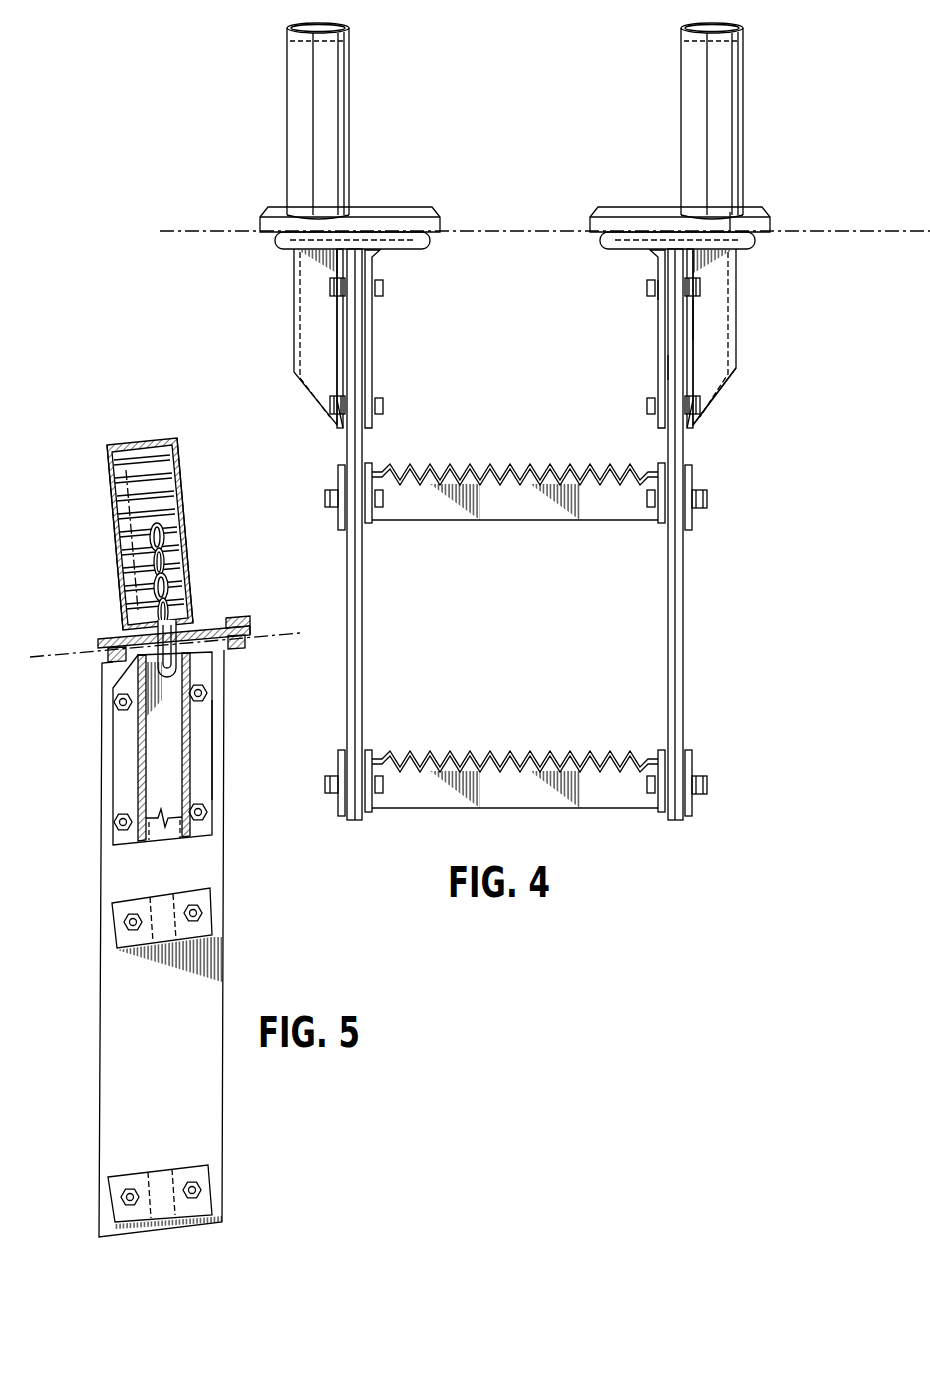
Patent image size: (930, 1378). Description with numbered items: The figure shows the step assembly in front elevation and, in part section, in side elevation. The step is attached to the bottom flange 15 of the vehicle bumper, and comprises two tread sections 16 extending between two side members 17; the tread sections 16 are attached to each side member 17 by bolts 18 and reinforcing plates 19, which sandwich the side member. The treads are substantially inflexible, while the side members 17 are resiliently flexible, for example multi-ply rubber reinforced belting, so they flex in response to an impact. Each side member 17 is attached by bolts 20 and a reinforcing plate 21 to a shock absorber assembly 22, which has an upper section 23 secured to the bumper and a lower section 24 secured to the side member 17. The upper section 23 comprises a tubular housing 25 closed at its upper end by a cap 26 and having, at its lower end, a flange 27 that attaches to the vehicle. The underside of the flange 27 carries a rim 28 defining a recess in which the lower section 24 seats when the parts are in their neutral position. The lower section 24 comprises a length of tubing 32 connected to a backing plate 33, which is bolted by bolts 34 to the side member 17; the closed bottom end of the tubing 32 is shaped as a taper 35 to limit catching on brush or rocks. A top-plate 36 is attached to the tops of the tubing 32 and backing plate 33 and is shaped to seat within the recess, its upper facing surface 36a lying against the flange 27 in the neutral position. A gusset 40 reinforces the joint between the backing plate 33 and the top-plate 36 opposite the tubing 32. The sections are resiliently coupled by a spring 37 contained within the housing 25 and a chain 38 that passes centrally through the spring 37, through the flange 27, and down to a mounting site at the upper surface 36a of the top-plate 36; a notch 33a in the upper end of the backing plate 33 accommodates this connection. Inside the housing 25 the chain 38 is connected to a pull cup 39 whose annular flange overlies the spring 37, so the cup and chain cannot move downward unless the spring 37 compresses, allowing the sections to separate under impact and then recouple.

In FIG. 4, the bottom flange 15 is at (510, 227).
In FIG. 4, the tread sections 16 is at (525, 511).
In FIG. 4, the side members 17 is at (358, 661).
In FIG. 5, the side members 17 is at (180, 1135).
In FIG. 4, the bolts 18 is at (696, 778).
In FIG. 5, the bolts 18 is at (190, 1176).
In FIG. 4, the reinforcing plates 19 is at (690, 761).
In FIG. 5, the reinforcing plates 19 is at (165, 1208).
In FIG. 4, the bolts 20 is at (660, 291).
In FIG. 4, the reinforcing plate 21 is at (660, 369).
In FIG. 4, the shock absorber assembly 22 is at (405, 96).
In FIG. 5, the upper section 23 is at (196, 465).
In FIG. 4, the lower section 24 is at (712, 326).
In FIG. 5, the lower section 24 is at (220, 752).
In FIG. 5, the tubular housing 25 is at (110, 481).
In FIG. 5, the cap 26 is at (135, 441).
In FIG. 4, the flange 27 is at (283, 207).
In FIG. 5, the flange 27 is at (205, 631).
In FIG. 4, the rim 28 is at (428, 241).
In FIG. 5, the rim 28 is at (258, 643).
In FIG. 4, the tubing 32 is at (313, 322).
In FIG. 5, the tubing 32 is at (211, 721).
In FIG. 4, the backing plate 33 is at (340, 393).
In FIG. 5, the backing plate 33 is at (115, 749).
In FIG. 5, the notch 33a is at (145, 696).
In FIG. 5, the bolts 34 is at (205, 811).
In FIG. 4, the taper 35 is at (720, 386).
In FIG. 4, the top-plate 36 is at (730, 213).
In FIG. 5, the top-plate 36 is at (252, 631).
In FIG. 5, the upper facing surface 36a is at (222, 624).
In FIG. 5, the spring 37 is at (190, 513).
In FIG. 5, the chain 38 is at (146, 571).
In FIG. 5, the pull cup 39 is at (172, 439).
In FIG. 4, the gusset 40 is at (378, 257).